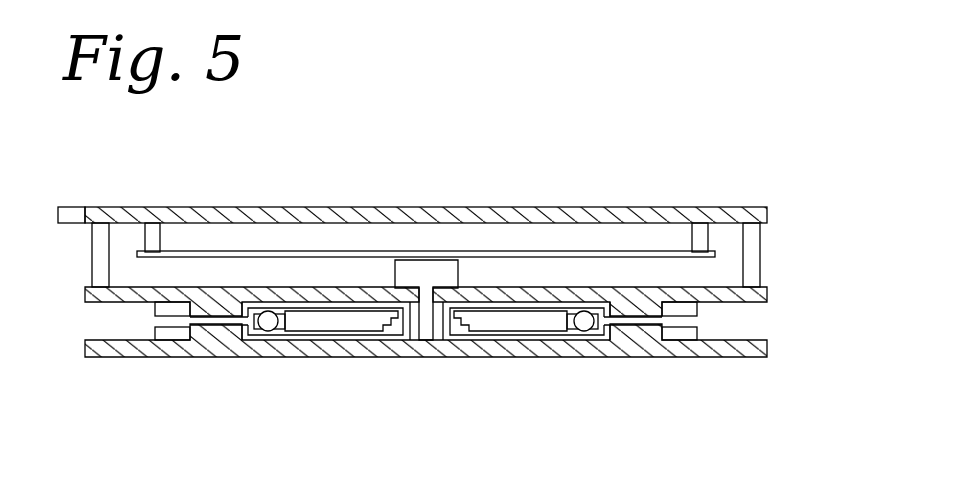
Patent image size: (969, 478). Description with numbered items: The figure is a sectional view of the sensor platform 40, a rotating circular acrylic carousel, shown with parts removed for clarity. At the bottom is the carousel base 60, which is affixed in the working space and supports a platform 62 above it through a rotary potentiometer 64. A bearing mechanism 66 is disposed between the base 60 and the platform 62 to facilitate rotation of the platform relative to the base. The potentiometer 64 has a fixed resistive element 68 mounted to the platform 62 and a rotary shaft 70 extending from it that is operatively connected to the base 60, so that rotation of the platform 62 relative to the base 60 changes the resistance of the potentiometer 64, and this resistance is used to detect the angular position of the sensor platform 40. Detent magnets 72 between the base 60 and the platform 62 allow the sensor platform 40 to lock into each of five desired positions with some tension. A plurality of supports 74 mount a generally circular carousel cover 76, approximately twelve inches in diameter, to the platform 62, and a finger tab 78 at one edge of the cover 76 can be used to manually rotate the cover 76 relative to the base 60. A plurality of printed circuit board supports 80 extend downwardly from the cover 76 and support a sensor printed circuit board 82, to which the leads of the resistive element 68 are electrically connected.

The sensor platform 40 is at (550, 150).
The carousel base 60 is at (763, 348).
The platform 62 is at (765, 287).
The rotary potentiometer 64 is at (391, 273).
The bearing mechanism 66 is at (590, 328).
The fixed resistive element 68 is at (445, 275).
The rotary shaft 70 is at (428, 312).
The detent magnets 72 is at (170, 308).
The supports 74 is at (755, 253).
The carousel cover 76 is at (755, 215).
The finger tab 78 is at (75, 207).
The printed circuit board supports 80 is at (153, 243).
The sensor printed circuit board 82 is at (548, 252).